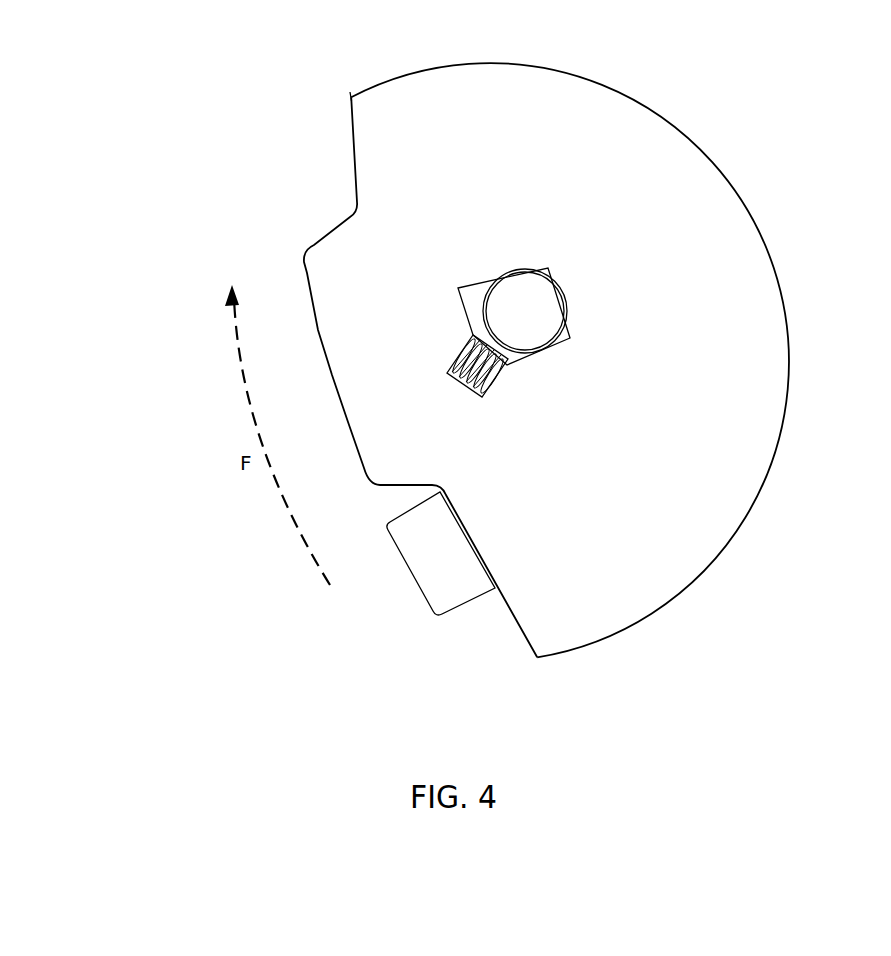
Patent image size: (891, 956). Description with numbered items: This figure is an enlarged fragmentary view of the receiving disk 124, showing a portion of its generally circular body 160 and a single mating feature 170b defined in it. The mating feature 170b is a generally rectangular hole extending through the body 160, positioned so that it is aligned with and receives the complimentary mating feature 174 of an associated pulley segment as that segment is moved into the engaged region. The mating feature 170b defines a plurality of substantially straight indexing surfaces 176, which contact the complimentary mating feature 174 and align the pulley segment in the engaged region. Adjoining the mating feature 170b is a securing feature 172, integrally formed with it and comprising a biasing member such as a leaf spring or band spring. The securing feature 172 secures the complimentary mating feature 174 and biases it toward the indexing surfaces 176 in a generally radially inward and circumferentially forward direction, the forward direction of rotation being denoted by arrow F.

The receiving disk 124 is at (216, 157).
The body 160 is at (703, 525).
The mating feature 170b is at (455, 299).
The securing feature 172 is at (462, 393).
The complimentary mating feature 174 is at (527, 298).
The indexing surface 176 is at (490, 280).